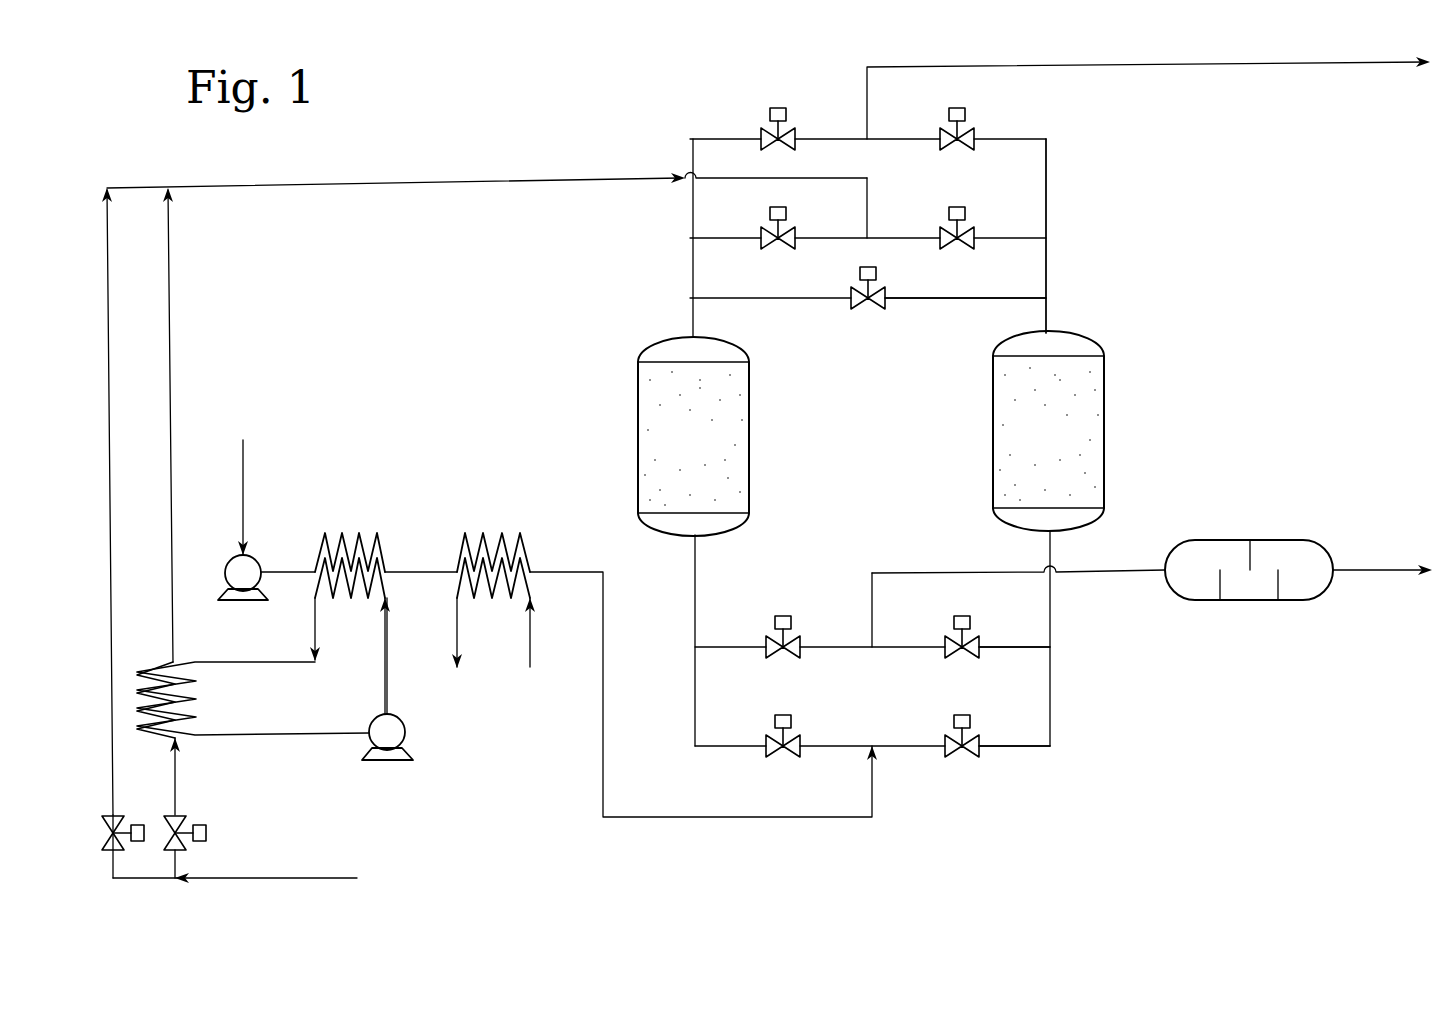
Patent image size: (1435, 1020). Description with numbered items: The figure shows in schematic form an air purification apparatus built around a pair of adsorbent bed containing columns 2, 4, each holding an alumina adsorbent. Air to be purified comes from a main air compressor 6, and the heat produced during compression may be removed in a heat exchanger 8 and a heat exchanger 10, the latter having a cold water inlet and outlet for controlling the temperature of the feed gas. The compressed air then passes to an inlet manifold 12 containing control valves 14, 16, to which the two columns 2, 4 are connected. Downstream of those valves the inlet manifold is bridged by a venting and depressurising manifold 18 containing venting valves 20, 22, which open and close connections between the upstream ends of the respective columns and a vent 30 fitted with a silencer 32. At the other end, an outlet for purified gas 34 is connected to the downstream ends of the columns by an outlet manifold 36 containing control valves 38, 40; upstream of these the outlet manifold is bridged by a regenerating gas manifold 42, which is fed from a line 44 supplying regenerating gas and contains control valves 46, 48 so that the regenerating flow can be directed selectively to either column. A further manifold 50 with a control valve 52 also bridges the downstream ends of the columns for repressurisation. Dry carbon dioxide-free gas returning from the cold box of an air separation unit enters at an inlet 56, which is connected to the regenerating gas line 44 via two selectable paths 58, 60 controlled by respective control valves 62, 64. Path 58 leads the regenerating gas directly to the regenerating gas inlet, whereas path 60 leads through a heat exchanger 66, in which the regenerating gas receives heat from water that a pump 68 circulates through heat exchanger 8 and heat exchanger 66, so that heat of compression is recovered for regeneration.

The adsorbent bed containing column 2 is at (750, 415).
The adsorbent bed containing column 4 is at (1105, 385).
The main air compressor 6 is at (253, 568).
The heat exchanger 8 is at (378, 535).
The heat exchanger 10 is at (520, 535).
The inlet manifold 12 is at (1030, 748).
The control valve 14 is at (793, 715).
The control valve 16 is at (967, 758).
The venting and depressurising manifold 18 is at (1022, 650).
The venting valve 20 is at (788, 615).
The venting valve 22 is at (967, 615).
The vent 30 is at (1365, 568).
The silencer 32 is at (1262, 540).
The outlet for purified gas 34 is at (1218, 62).
The outlet manifold 36 is at (1043, 136).
The control valve 38 is at (770, 107).
The control valve 40 is at (965, 107).
The regenerating gas manifold 42 is at (995, 236).
The line supplying regenerating gas 44 is at (497, 183).
The control valve 46 is at (786, 248).
The control valve 48 is at (959, 206).
The further manifold 50 is at (985, 296).
The control valve 52 is at (875, 306).
The inlet 56 is at (315, 877).
The path 58 is at (108, 347).
The path 60 is at (170, 342).
The control valve 62 is at (139, 822).
The control valve 64 is at (208, 832).
The heat exchanger 66 is at (142, 665).
The pump 68 is at (404, 725).